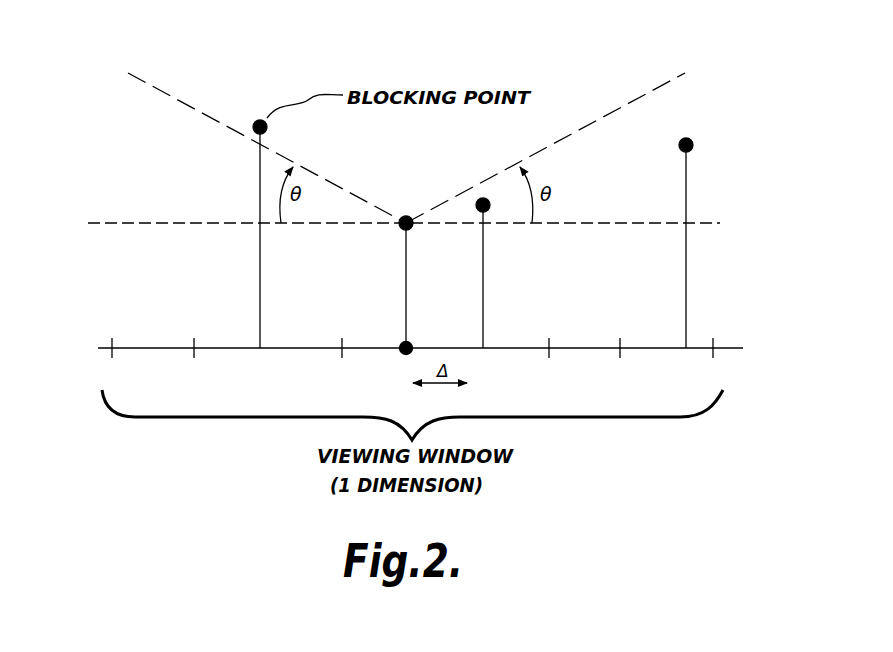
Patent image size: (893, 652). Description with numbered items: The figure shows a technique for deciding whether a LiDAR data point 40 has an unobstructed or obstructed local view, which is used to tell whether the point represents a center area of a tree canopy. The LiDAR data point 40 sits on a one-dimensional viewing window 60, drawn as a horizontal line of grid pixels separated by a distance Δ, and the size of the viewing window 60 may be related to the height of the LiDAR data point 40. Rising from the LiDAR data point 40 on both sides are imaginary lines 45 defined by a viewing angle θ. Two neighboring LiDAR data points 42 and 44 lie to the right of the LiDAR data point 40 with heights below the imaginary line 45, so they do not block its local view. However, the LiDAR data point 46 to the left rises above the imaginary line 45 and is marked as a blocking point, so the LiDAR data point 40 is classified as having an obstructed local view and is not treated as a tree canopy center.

The LiDAR data point 40 is at (408, 216).
The neighboring LiDAR data point 42 is at (484, 198).
The neighboring LiDAR data point 44 is at (694, 144).
The imaginary line 45 is at (150, 82).
The LiDAR data point 46 is at (268, 124).
The viewing window 60 is at (730, 349).